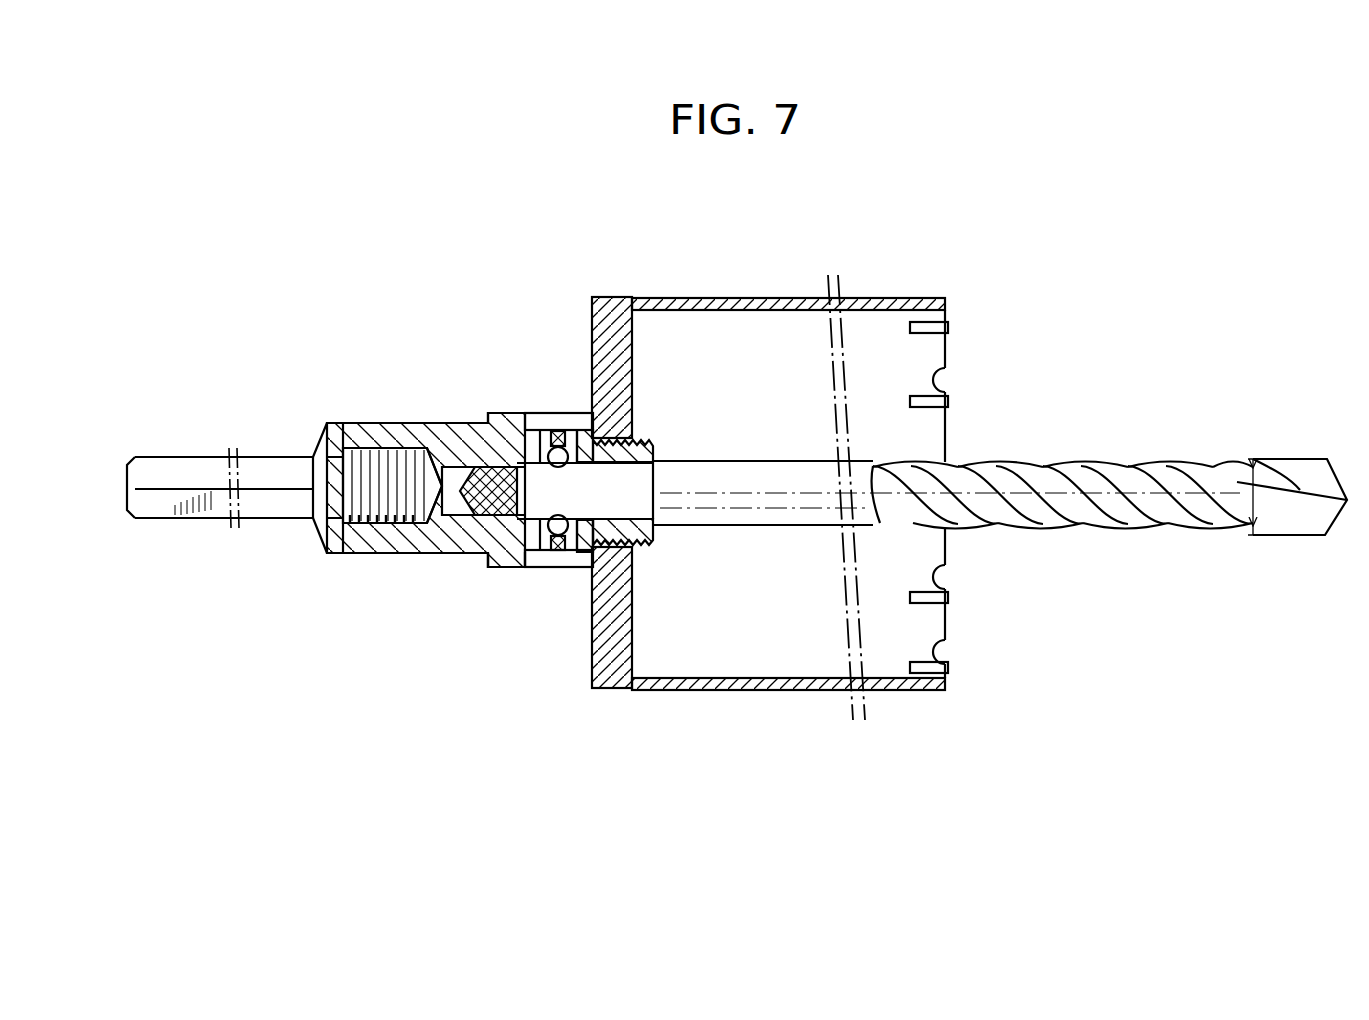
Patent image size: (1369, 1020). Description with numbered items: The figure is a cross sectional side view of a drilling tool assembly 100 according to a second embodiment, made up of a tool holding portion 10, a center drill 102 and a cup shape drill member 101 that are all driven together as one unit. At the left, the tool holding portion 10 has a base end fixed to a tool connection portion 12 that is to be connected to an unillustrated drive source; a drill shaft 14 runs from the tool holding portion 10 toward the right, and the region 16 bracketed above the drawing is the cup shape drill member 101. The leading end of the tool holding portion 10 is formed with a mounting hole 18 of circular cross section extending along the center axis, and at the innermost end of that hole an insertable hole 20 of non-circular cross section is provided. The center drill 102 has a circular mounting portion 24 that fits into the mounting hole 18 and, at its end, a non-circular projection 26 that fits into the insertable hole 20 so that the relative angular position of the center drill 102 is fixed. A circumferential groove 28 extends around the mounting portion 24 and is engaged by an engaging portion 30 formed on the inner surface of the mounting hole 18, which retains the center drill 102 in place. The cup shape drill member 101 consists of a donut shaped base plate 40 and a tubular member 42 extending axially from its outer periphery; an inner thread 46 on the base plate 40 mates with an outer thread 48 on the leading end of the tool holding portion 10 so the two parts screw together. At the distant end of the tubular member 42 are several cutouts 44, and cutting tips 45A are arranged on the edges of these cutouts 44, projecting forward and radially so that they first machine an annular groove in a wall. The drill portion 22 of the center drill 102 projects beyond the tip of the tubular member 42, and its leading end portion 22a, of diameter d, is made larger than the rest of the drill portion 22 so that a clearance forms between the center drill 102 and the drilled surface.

The tool holding portion 10 is at (447, 432).
The tool connection portion 12 is at (274, 460).
The center shaft 14 is at (795, 470).
The hole saw cup 16 is at (749, 439).
The mounting hole 18 is at (520, 455).
The insertable hole 20 is at (407, 555).
The drill portion 22 is at (1183, 472).
The leading end portion 22a is at (1317, 473).
The mounting portion 24 is at (633, 507).
The projection 26 is at (462, 540).
The circumferential groove 28 is at (510, 565).
The engaging portion 30 is at (553, 419).
The base plate 40 is at (585, 345).
The tubular member 42 is at (788, 464).
The cutouts 44 is at (936, 386).
The cutting tips 45A is at (948, 330).
The inner thread 46 is at (592, 535).
The outer thread 48 is at (646, 440).
The drilling tool assembly 100 is at (492, 713).
The cup shape drill member 101 is at (668, 694).
The center drill 102 is at (1131, 538).
The drill diameter d is at (1253, 468).